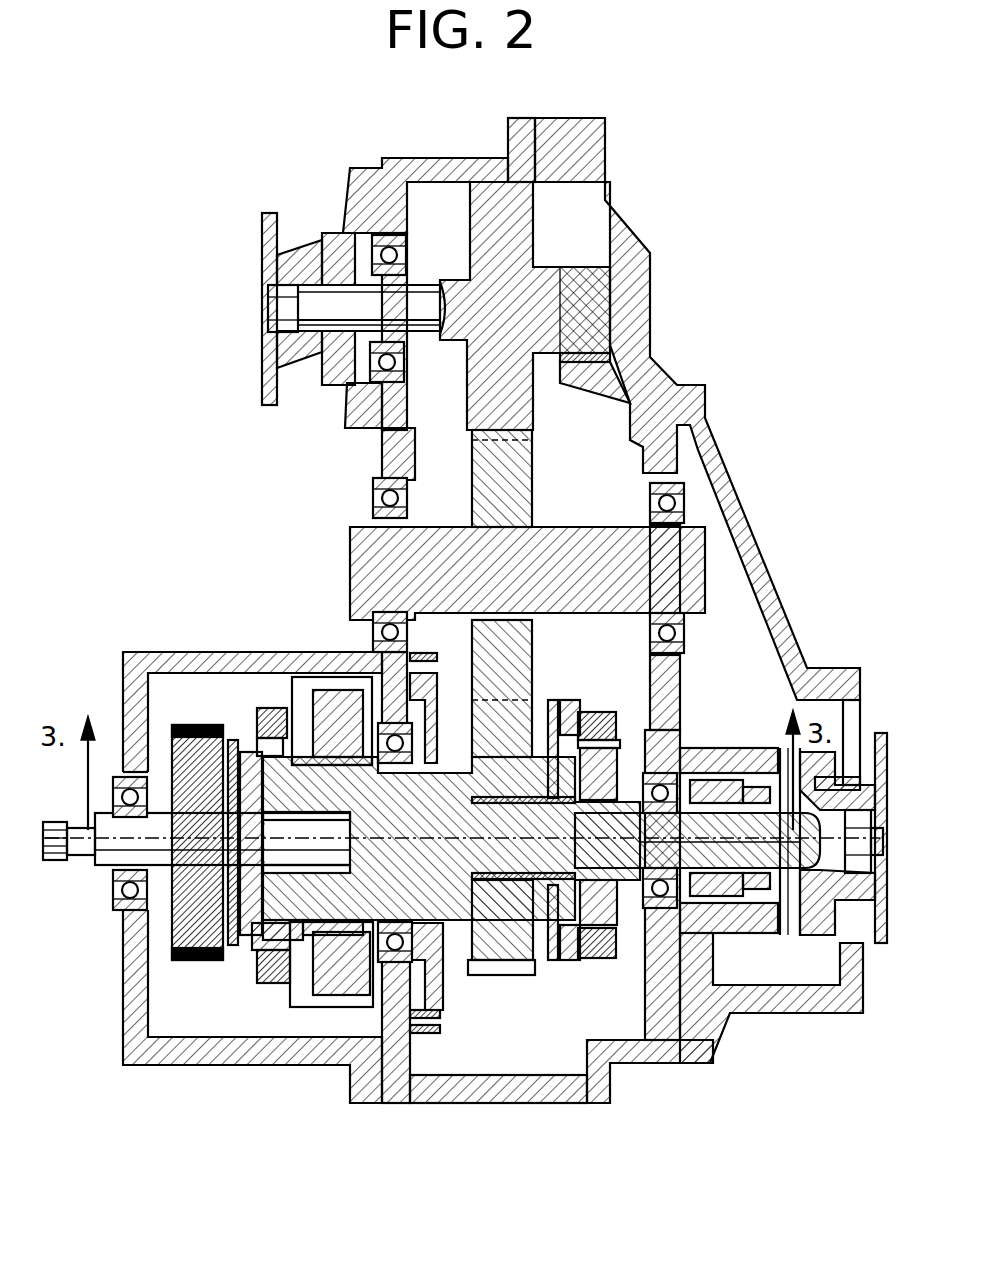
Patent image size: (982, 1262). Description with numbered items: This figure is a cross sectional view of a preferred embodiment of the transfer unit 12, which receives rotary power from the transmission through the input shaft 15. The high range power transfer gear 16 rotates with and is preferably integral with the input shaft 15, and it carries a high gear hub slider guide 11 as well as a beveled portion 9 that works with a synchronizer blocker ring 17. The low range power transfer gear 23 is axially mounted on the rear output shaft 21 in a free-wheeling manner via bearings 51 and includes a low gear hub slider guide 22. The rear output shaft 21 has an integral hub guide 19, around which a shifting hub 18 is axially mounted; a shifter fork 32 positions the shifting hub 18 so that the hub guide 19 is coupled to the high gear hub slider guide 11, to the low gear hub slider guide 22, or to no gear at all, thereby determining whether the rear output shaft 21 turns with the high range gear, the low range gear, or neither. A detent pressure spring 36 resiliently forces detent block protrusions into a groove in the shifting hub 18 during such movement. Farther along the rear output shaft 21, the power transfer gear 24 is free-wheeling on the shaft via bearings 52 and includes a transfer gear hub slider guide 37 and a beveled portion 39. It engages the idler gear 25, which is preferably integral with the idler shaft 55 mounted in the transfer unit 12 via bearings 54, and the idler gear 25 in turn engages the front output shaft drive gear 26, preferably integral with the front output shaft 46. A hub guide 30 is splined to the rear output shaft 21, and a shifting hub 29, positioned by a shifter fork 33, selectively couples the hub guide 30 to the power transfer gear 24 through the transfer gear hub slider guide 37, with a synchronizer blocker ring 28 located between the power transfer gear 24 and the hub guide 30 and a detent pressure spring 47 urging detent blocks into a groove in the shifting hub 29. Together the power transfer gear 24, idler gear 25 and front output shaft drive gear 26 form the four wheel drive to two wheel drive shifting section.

The beveled portion 9 is at (172, 950).
The high gear hub slider guide 11 is at (232, 742).
The transfer unit 12 is at (193, 440).
The input shaft 15 is at (108, 858).
The high range power transfer gear 16 is at (188, 723).
The synchronizer blocker ring 17 is at (243, 950).
The shifting hub 18 is at (252, 950).
The hub guide 19 is at (290, 745).
The rear output shaft 21 is at (765, 935).
The low gear hub slider guide 22 is at (308, 1007).
The low range power transfer gear 23 is at (342, 700).
The power transfer gear 24 is at (485, 960).
The idler gear 25 is at (538, 462).
The front output shaft drive gear 26 is at (518, 218).
The synchronizer blocker ring 28 is at (580, 960).
The shifting hub 29 is at (638, 728).
The hub guide 30 is at (625, 760).
The shifter fork 32 is at (277, 708).
The shifter fork 33 is at (598, 712).
The detent pressure spring 36 is at (278, 925).
The transfer gear hub slider guide 37 is at (556, 960).
The beveled portion 39 is at (567, 770).
The front output shaft 46 is at (312, 300).
The detent pressure spring 47 is at (590, 935).
The bearings 51 is at (330, 920).
The bearings 52 is at (517, 975).
The bearings 54 is at (373, 500).
The idler shaft 55 is at (690, 565).